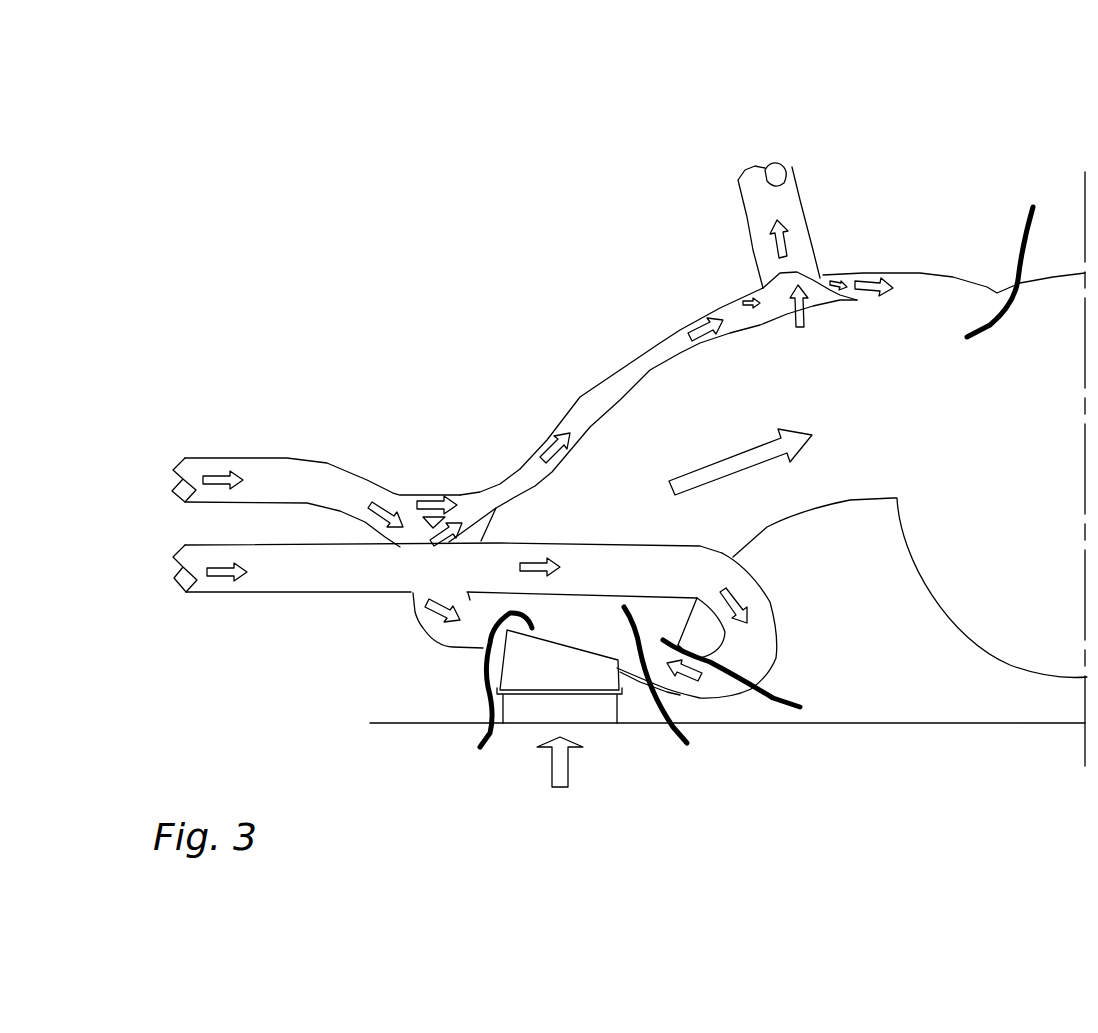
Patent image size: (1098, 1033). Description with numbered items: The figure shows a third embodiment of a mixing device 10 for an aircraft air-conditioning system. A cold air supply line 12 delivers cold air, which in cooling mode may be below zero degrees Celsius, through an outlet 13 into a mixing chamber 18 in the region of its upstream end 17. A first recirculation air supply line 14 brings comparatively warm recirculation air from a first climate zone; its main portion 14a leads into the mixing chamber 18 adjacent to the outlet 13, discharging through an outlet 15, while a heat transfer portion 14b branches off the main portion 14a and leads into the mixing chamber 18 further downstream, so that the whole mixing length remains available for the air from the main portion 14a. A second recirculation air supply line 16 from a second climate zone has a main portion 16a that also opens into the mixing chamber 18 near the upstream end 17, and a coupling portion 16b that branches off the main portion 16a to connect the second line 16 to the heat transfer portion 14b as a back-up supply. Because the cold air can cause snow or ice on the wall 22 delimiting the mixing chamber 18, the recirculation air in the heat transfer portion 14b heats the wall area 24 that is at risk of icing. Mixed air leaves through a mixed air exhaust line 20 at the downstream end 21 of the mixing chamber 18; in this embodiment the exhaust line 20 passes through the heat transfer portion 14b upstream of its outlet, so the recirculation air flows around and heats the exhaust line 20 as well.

The mixing device 10 is at (893, 137).
The cold air supply line 12 is at (620, 713).
The outlet of the cold air supply line 13 is at (487, 704).
The first recirculation air supply line 14 is at (300, 573).
The main portion of the first recirculation air supply line 14a is at (760, 645).
The heat transfer portion of the first recirculation air supply line 14b is at (602, 387).
The outlet of the main portion 15 is at (755, 680).
The second recirculation air supply line 16 is at (262, 467).
The main portion of the second recirculation air supply line 16a is at (468, 593).
The coupling portion 16b is at (430, 502).
The upstream end of the mixing chamber 17 is at (678, 691).
The mixing chamber 18 is at (900, 347).
The mixed air exhaust line 20 is at (790, 200).
The downstream end of the mixing chamber 21 is at (1007, 241).
The wall of the mixing chamber 22 is at (767, 537).
The mixing chamber wall area at risk of icing 24 is at (647, 378).